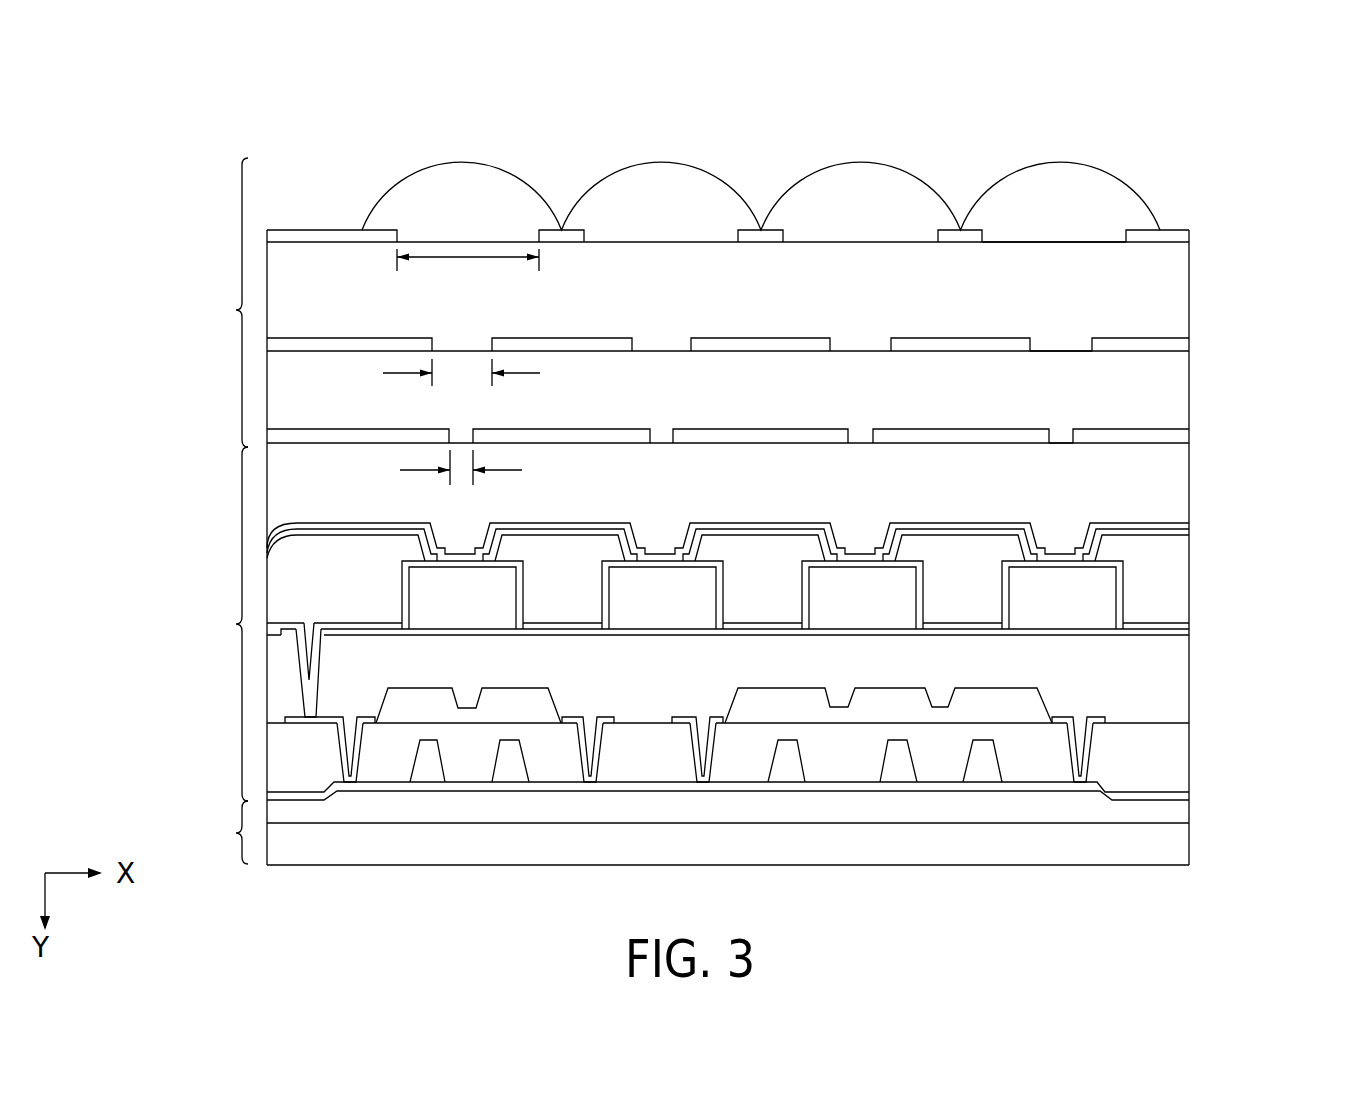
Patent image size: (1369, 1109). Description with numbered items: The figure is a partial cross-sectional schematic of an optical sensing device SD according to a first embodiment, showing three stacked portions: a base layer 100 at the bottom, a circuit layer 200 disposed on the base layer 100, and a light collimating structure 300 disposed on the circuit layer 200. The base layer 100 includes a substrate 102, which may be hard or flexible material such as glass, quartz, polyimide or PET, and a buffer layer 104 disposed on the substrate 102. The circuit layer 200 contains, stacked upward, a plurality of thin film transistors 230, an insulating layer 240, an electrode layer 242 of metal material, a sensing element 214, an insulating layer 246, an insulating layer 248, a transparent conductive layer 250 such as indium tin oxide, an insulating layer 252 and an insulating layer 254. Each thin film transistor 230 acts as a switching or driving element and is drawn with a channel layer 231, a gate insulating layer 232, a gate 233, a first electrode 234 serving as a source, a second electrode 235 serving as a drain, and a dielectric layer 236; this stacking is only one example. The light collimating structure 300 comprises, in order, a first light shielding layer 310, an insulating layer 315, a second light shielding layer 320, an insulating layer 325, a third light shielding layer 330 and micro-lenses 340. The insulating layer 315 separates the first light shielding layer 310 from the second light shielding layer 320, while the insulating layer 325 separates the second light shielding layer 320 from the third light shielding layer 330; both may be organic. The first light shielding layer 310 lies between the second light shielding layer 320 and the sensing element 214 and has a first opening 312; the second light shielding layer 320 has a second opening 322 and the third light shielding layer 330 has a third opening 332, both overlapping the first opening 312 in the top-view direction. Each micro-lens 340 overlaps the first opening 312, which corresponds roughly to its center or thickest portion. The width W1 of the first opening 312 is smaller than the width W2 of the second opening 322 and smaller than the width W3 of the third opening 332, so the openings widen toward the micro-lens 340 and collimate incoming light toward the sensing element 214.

The optical sensing device SD is at (1232, 127).
The base layer 100 is at (219, 832).
The substrate 102 is at (1175, 854).
The buffer layer 104 is at (1175, 821).
The circuit layer 200 is at (219, 624).
The sensing element 214 is at (1105, 595).
The thin film transistor 230 is at (895, 710).
The channel layer 231 is at (1095, 797).
The gate insulating layer 232 is at (1100, 774).
The gate 233 is at (982, 740).
The first electrode 234 is at (715, 717).
The second electrode 235 is at (1099, 717).
The dielectric layer 236 is at (1175, 726).
The insulating layer 240 is at (1177, 668).
The electrode layer 242 is at (1178, 636).
The insulating layer 246 is at (1178, 624).
The insulating layer 248 is at (1180, 547).
The transparent conductive layer 250 is at (1187, 531).
The insulating layer 252 is at (1178, 527).
The insulating layer 254 is at (1170, 458).
The light collimating structure 300 is at (219, 302).
The first light shielding layer 310 is at (1177, 436).
The first opening 312 is at (1067, 418).
The insulating layer 315 is at (1180, 387).
The second light shielding layer 320 is at (1180, 350).
The second opening 322 is at (1074, 333).
The insulating layer 325 is at (1180, 290).
The third light shielding layer 330 is at (1180, 236).
The third opening 332 is at (1065, 257).
The micro-lens 340 is at (1112, 186).
The width of the first opening W1 is at (461, 483).
The width of the second opening W2 is at (461, 383).
The width of the third opening W3 is at (468, 267).